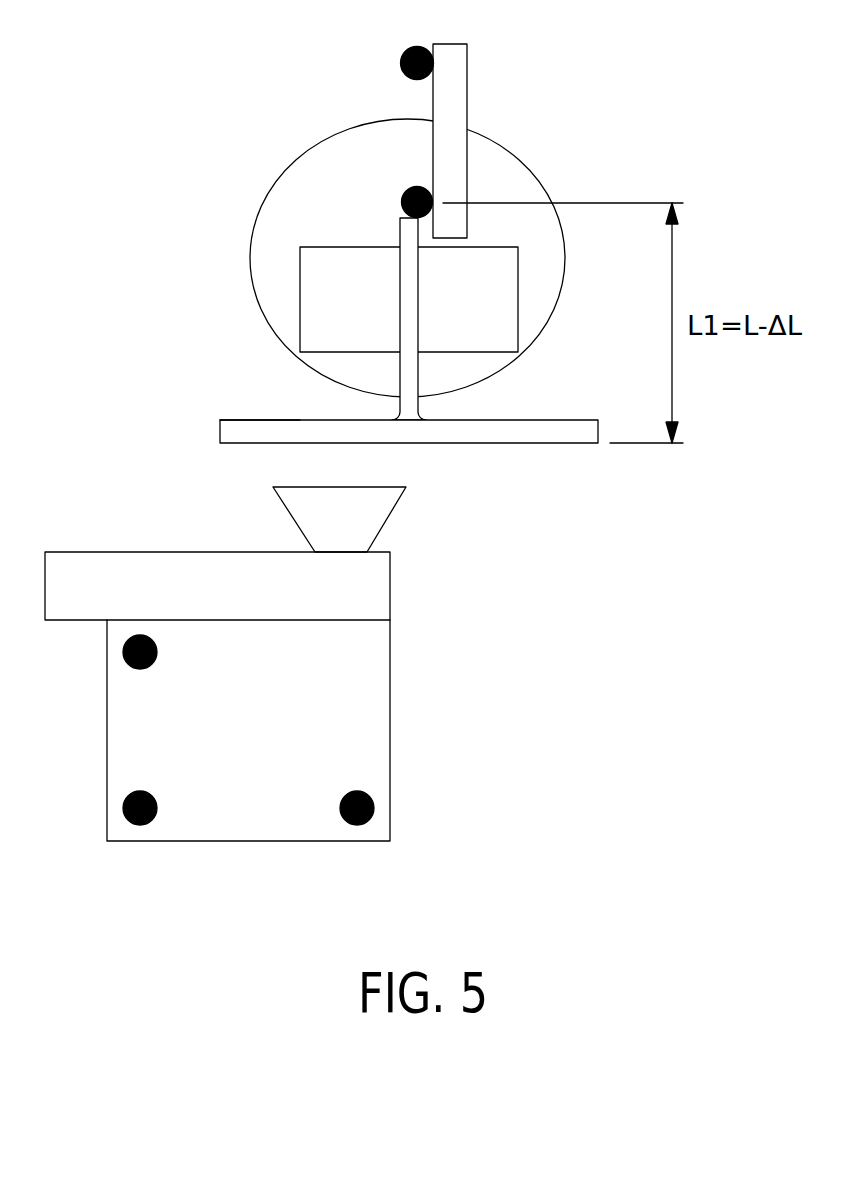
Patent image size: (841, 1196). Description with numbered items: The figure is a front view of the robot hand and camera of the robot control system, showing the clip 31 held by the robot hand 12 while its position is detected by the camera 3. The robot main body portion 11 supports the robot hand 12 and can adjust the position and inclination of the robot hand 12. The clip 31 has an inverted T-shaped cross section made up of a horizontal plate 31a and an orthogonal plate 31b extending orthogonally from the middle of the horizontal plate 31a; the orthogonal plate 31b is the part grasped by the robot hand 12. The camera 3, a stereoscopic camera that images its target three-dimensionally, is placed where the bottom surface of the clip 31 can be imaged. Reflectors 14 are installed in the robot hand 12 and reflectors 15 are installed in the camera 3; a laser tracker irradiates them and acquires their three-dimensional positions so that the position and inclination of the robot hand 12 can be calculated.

The camera 3 is at (392, 690).
The robot main body portion 11 is at (518, 156).
The robot hand 12 is at (300, 268).
The reflector 14 is at (400, 60).
The reflector 15 is at (124, 652).
The clip 31 is at (592, 401).
The horizontal plate 31a is at (238, 420).
The orthogonal plate 31b is at (419, 383).